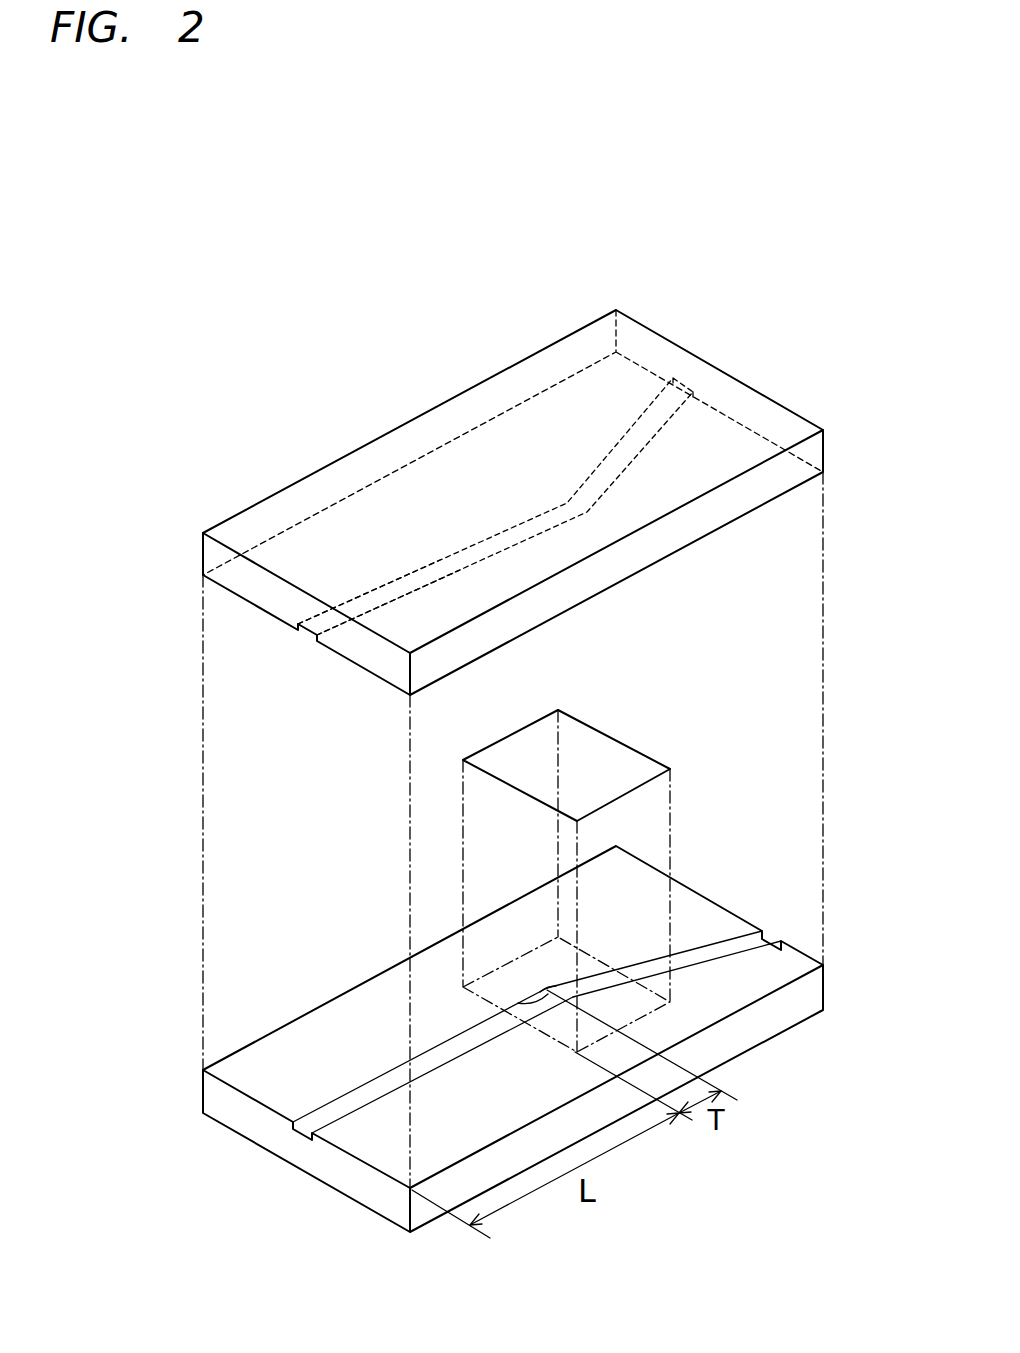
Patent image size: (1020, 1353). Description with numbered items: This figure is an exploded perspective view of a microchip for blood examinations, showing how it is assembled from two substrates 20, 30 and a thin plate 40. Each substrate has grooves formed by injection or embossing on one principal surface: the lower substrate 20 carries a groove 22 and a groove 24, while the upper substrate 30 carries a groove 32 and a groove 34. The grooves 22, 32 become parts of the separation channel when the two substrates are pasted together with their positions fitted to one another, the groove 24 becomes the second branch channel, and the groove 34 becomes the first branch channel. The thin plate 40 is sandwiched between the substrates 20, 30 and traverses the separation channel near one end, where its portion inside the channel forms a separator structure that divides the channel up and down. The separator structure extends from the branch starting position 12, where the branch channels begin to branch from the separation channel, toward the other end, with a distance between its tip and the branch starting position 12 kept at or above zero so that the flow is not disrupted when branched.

The branch starting position 12 is at (545, 989).
The substrate 20 is at (770, 1053).
The groove 22 is at (380, 1088).
The groove 24 is at (698, 950).
The substrate 30 is at (748, 362).
The groove 32 is at (387, 593).
The groove 34 is at (639, 434).
The thin plate 40 is at (600, 732).